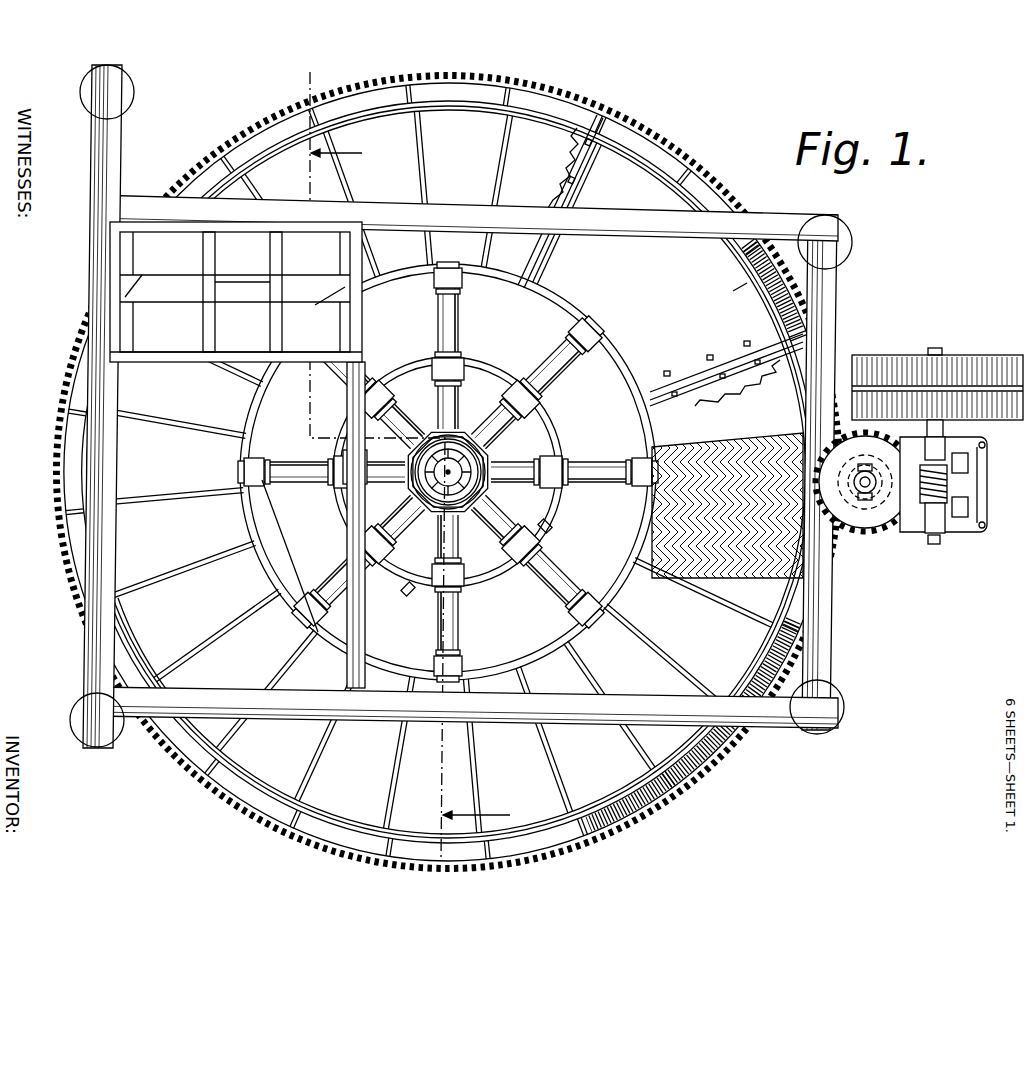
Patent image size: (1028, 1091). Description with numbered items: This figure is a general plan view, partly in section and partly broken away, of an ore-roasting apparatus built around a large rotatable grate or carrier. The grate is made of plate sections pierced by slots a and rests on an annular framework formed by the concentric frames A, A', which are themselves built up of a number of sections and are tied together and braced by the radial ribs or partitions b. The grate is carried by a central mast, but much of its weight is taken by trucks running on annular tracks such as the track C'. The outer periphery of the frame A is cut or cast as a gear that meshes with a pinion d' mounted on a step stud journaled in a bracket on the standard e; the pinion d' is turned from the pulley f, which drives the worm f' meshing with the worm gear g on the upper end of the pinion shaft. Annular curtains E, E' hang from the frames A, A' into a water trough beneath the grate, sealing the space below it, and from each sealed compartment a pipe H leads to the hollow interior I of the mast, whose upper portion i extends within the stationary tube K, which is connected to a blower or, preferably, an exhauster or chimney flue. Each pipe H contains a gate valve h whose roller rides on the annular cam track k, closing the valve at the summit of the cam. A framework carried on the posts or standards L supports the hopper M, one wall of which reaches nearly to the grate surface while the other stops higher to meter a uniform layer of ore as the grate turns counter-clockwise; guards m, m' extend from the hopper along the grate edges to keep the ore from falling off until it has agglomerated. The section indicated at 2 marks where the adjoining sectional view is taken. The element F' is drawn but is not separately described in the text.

The concentric frame A is at (423, 472).
The concentric frame A' is at (448, 472).
The radial ribs or partitions b is at (660, 380).
The annular track C' is at (448, 472).
The pipe H is at (470, 355).
The stationary tube K is at (460, 505).
The upper portion of the mast i is at (478, 484).
The hollow interior of the central mast I is at (412, 484).
The annular cam track k is at (552, 410).
The gate valve h is at (550, 530).
The guard m is at (290, 556).
The guard m' is at (147, 650).
The guide bars F' is at (660, 265).
The annular curtain E' is at (701, 340).
The annular curtain E is at (723, 305).
The slots a is at (735, 445).
The section line 2— 2 is at (396, 465).
The posts or standards L is at (134, 94).
The hopper M is at (175, 322).
The worm gear g is at (882, 537).
The pinion d' is at (865, 494).
The pulley f is at (937, 371).
The standard e is at (1000, 442).
The worm f' is at (941, 507).